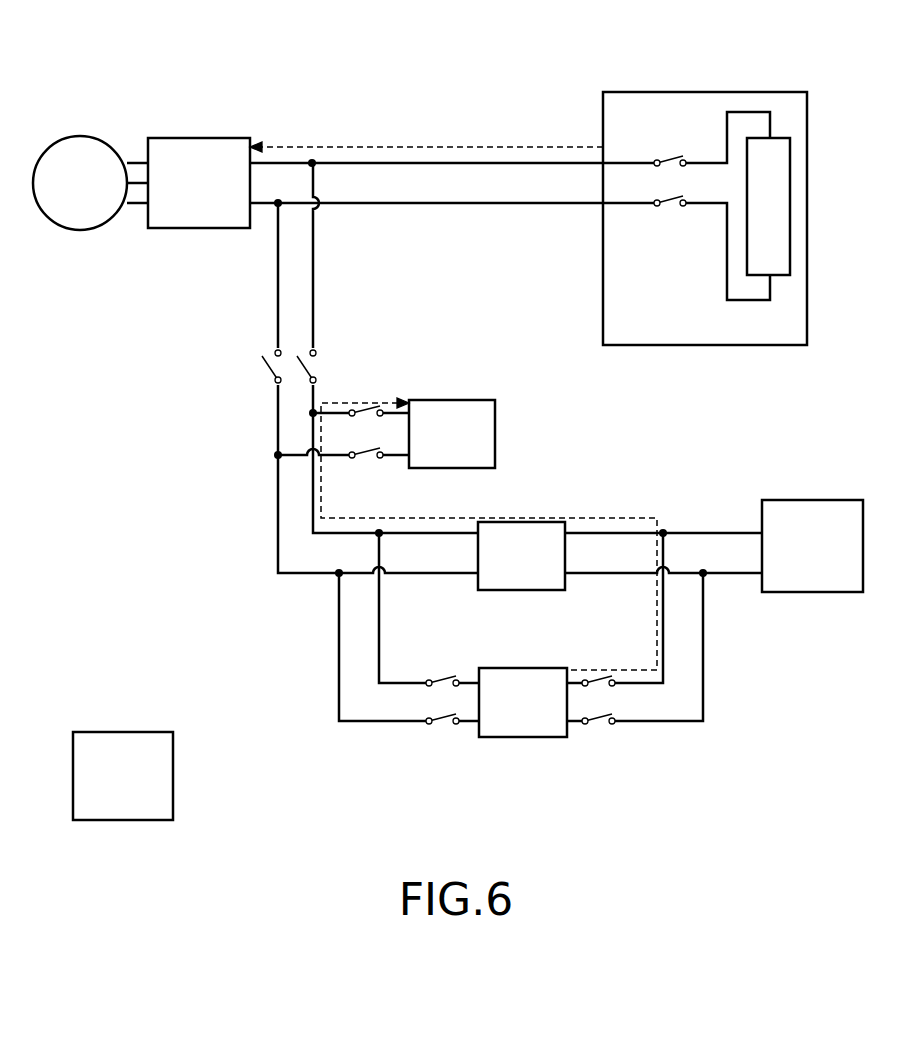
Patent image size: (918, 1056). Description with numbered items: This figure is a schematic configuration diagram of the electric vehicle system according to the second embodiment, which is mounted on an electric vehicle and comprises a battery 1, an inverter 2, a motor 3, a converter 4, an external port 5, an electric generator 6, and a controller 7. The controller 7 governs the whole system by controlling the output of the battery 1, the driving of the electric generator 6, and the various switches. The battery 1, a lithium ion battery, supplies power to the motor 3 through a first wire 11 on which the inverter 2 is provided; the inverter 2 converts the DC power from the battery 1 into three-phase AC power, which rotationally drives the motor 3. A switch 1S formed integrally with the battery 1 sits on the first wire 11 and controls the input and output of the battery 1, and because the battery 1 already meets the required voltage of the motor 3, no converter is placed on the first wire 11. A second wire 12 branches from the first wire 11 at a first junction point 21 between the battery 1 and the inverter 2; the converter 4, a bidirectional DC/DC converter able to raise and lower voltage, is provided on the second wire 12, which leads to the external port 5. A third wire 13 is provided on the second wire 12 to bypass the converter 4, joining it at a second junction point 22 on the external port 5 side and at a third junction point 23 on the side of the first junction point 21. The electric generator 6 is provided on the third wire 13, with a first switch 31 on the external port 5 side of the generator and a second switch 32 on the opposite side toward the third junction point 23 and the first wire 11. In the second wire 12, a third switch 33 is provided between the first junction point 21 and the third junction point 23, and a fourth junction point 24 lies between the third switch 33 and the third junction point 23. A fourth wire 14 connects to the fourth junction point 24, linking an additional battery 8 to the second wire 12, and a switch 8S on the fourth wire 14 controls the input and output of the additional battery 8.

The battery 1 is at (720, 92).
The switch 1S is at (665, 145).
The inverter 2 is at (210, 138).
The motor 3 is at (88, 135).
The converter 4 is at (520, 522).
The external port 5 is at (797, 500).
The electric generator 6 is at (503, 668).
The controller 7 is at (115, 732).
The additional battery 8 is at (440, 400).
The switch 8S is at (382, 400).
The first wire 11 is at (468, 163).
The second wire 12 is at (313, 245).
The third wire 13 is at (663, 615).
The fourth wire 14 is at (335, 410).
The first junction point 21 is at (313, 160).
The second junction point 22 is at (663, 533).
The third junction point 23 is at (380, 533).
The fourth junction point 24 is at (313, 415).
The first switch 31 is at (605, 690).
The second switch 32 is at (442, 690).
The third switch 33 is at (278, 375).